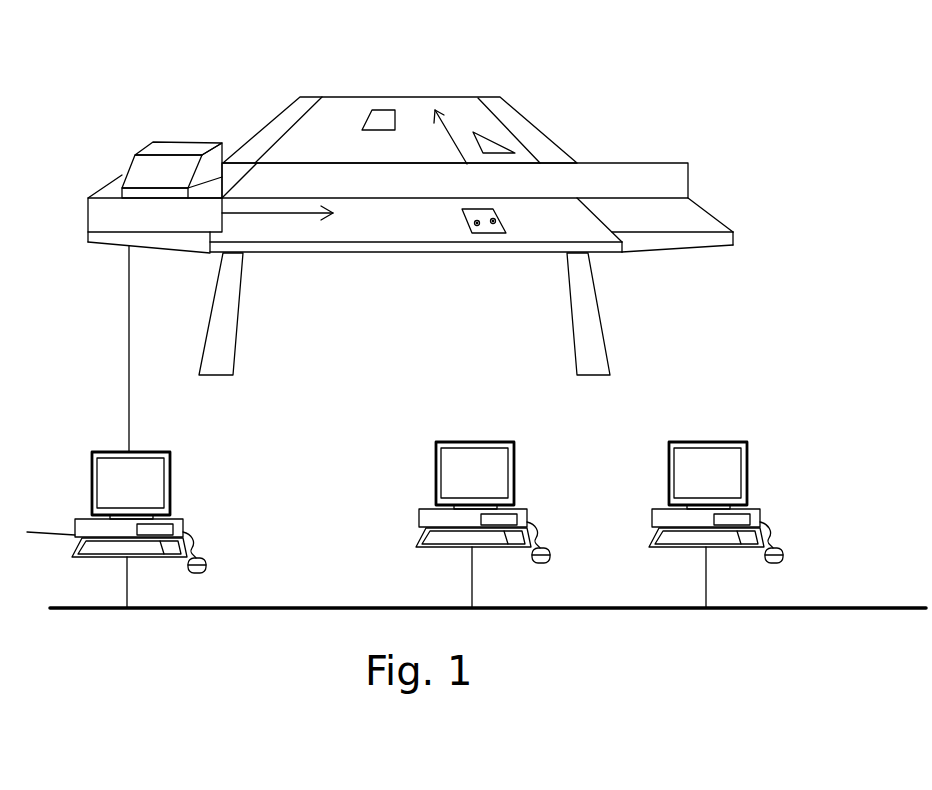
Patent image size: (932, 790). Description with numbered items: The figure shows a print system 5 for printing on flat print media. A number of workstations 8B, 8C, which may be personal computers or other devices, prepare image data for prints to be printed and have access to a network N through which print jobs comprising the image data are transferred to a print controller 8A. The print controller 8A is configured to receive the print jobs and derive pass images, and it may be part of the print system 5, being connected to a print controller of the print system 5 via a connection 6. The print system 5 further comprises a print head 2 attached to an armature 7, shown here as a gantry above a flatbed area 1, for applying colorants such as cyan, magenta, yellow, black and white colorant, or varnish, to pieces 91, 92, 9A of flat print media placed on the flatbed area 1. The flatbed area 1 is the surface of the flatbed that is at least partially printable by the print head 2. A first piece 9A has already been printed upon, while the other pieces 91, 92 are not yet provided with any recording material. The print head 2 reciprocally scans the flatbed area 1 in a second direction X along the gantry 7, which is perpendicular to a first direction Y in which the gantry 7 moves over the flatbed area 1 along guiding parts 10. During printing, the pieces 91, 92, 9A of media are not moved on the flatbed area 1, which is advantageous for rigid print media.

The flatbed area 1 is at (335, 140).
The print head 2 is at (145, 145).
The print system 5 is at (775, 254).
The connection 6 is at (130, 388).
The armature 7 is at (637, 176).
The print controller 8A is at (183, 525).
The workstation 8B is at (526, 515).
The workstation 8C is at (759, 516).
The first piece of media 9A is at (487, 233).
The guiding parts 10 is at (250, 155).
The piece of media 91 is at (485, 133).
The piece of media 92 is at (383, 114).
The network N is at (898, 607).
The second direction X is at (270, 217).
The first direction Y is at (452, 144).